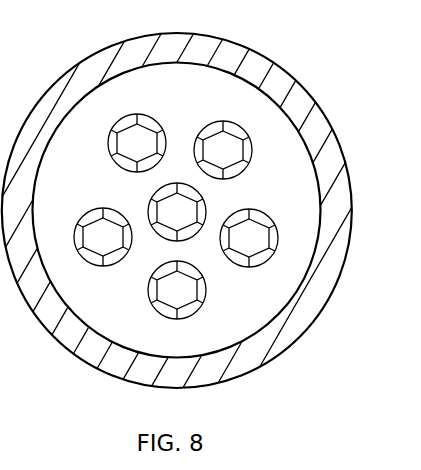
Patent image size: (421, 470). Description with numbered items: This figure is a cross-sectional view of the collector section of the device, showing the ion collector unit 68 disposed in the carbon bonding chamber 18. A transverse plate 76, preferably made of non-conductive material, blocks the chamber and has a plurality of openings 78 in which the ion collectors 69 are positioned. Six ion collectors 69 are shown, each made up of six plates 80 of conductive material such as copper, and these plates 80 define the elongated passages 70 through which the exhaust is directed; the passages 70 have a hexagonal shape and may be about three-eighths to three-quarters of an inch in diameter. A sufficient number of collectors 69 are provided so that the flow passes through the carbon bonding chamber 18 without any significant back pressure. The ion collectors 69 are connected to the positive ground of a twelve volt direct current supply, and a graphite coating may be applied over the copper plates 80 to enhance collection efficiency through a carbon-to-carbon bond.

The carbon bonding chamber 18 is at (302, 68).
The ion collector unit 68 is at (295, 127).
The transverse plate 76 is at (302, 165).
The openings 78 is at (77, 227).
The plates 80 is at (203, 243).
The elongated passages 70 is at (172, 288).
The ion collectors 69 is at (223, 297).